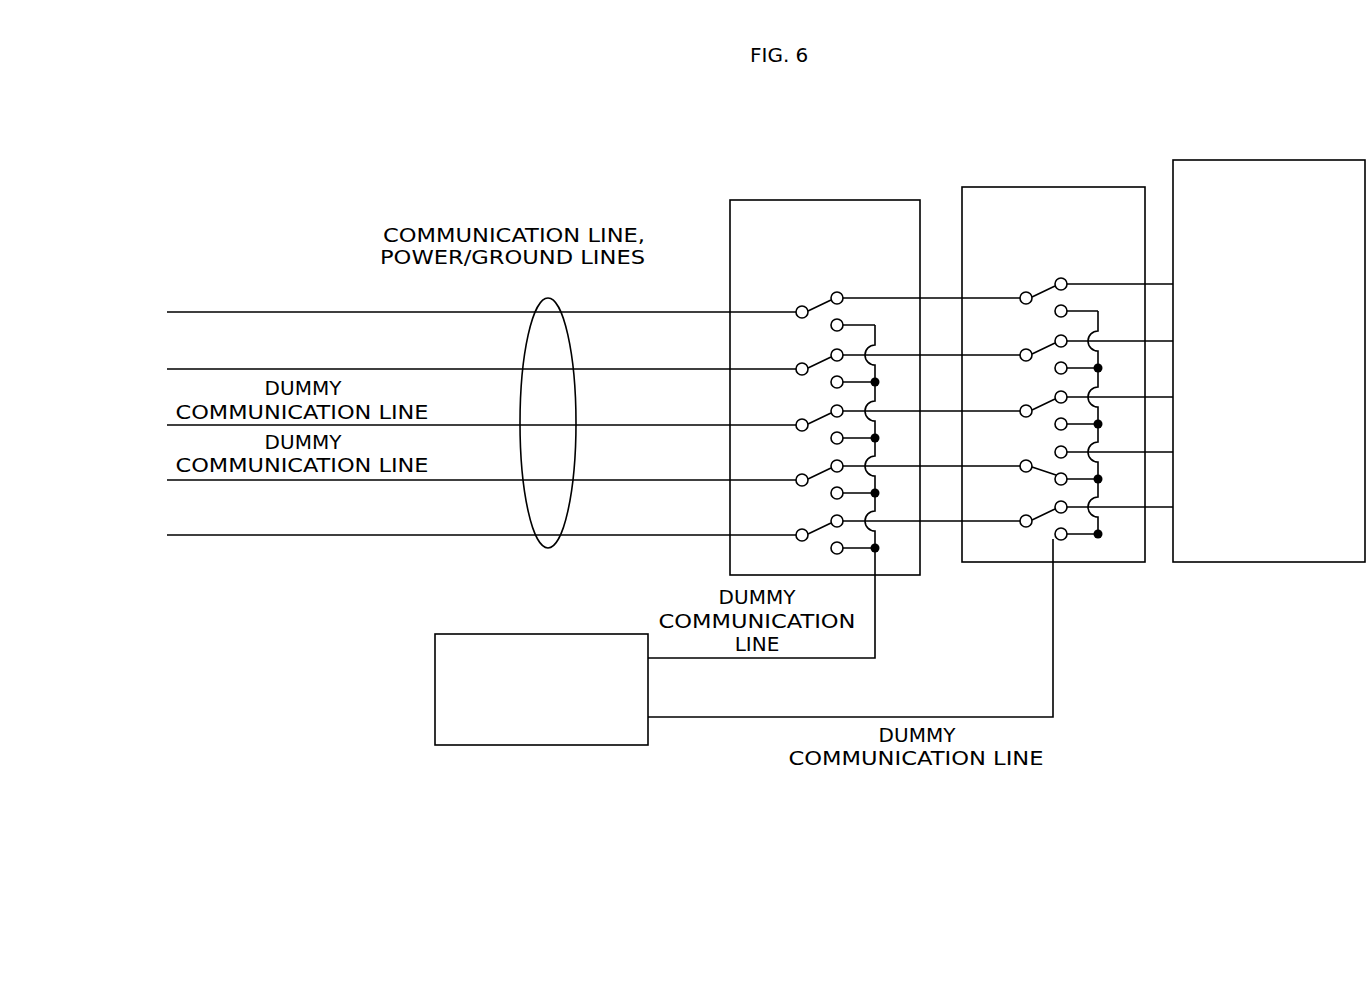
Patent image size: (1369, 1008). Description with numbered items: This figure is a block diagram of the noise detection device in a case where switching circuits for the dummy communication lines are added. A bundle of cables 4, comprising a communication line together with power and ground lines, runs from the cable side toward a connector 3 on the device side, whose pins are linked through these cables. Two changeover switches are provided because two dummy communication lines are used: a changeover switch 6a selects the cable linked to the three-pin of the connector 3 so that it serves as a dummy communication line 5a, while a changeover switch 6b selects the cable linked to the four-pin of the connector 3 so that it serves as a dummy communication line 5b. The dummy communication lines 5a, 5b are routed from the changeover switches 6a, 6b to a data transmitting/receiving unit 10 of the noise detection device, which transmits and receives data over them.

The connector 3 is at (1292, 160).
The communication line, power/ground lines 4 is at (556, 300).
The dummy communication line 5a is at (445, 424).
The dummy communication line 5b is at (445, 479).
The changeover switch 6a is at (840, 200).
The changeover switch 6b is at (1065, 187).
The data transmitting/receiving unit 10 is at (565, 634).